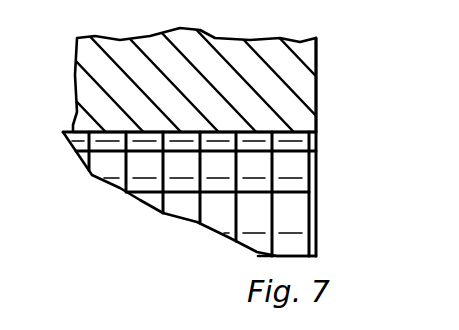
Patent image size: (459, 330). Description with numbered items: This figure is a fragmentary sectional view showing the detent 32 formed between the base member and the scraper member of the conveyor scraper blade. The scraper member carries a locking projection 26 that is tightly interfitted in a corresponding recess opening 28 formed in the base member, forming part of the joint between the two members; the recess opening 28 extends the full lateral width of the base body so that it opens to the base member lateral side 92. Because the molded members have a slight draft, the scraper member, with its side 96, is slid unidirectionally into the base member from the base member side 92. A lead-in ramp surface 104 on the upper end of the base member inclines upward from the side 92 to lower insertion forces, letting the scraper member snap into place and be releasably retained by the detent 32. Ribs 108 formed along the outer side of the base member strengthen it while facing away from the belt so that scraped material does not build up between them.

The locking projection 26 is at (300, 162).
The recess opening 28 is at (320, 222).
The detent 32 is at (282, 122).
The base member lateral side 92 is at (297, 215).
The scraper member side 96 is at (320, 82).
The lead-in ramp surface 104 is at (320, 132).
The ribs 108 is at (127, 158).